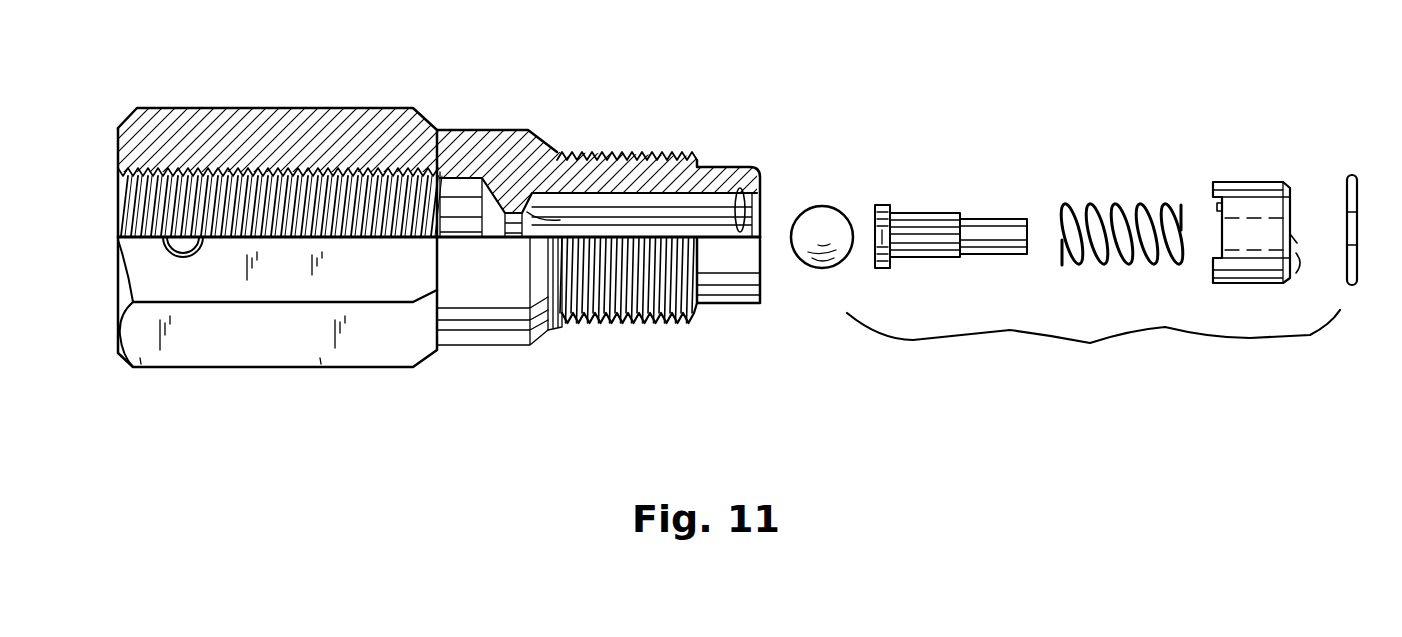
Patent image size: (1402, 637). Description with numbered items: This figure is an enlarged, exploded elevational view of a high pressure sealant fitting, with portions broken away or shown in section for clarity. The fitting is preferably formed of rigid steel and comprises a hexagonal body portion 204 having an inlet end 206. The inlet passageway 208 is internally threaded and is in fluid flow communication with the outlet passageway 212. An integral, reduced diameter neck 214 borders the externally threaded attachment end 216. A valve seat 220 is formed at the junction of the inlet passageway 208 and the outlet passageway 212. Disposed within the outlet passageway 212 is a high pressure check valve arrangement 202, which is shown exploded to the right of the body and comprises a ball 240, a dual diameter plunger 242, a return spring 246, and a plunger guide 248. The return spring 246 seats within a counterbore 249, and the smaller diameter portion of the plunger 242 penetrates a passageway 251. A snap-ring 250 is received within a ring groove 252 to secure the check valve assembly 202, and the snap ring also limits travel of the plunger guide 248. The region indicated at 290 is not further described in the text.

The high pressure check valve arrangement 202 is at (1093, 340).
The hexagonal body portion 204 is at (260, 343).
The inlet end 206 is at (110, 192).
The inlet passageway 208 is at (253, 200).
The outlet passageway 212 is at (697, 207).
The reduced diameter neck 214 is at (488, 152).
The externally threaded attachment end 216 is at (640, 320).
The valve seat 220 is at (527, 212).
The ball 240 is at (827, 223).
The dual diameter plunger 242 is at (932, 200).
The return spring 246 is at (1088, 202).
The plunger guide 248 is at (1242, 182).
The counterbore 249 is at (1214, 216).
The snap-ring 250 is at (1345, 176).
The passageway 251 is at (1292, 291).
The ring groove 252 is at (748, 192).
The passage 290 is at (685, 90).